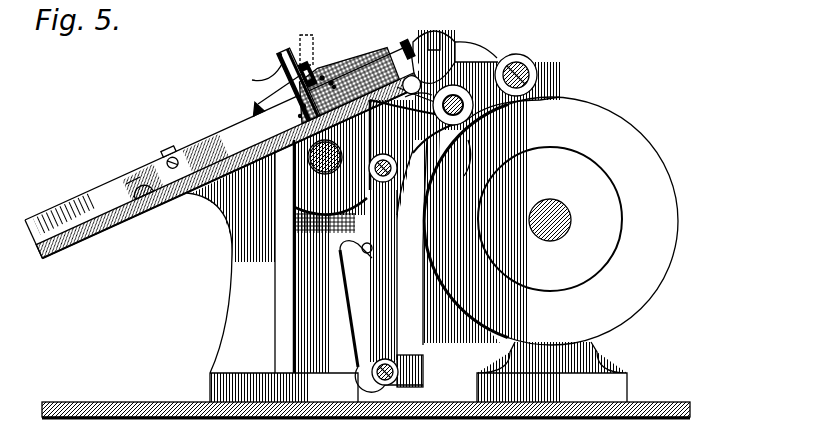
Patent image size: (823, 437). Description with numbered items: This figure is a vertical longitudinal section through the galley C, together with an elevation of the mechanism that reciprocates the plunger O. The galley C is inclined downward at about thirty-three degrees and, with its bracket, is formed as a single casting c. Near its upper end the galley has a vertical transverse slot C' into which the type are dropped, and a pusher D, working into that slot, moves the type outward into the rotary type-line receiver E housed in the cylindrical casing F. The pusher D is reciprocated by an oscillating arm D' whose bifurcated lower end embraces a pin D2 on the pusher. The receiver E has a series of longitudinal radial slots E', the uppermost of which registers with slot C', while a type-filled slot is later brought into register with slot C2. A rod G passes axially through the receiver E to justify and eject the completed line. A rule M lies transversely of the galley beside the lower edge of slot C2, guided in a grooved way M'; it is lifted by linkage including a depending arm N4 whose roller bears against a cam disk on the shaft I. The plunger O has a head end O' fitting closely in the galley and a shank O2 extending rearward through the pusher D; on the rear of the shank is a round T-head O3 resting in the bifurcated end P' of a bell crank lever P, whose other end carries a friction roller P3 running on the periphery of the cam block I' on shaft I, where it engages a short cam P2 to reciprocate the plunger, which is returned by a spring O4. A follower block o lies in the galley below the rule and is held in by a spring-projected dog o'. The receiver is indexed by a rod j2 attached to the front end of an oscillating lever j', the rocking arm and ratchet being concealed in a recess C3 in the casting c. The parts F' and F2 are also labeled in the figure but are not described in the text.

The galley C is at (224, 148).
The casting c is at (246, 240).
The follower block o is at (133, 168).
The spring projected dog o' is at (176, 148).
The slot C2 is at (259, 74).
The cylindrical casing F is at (265, 91).
The grooved way M' is at (257, 46).
The pin D2 is at (283, 50).
The oscillating arm D' is at (316, 40).
The pusher D is at (314, 65).
The vertical transverse slot C' is at (334, 65).
The stop pin F' is at (348, 65).
The shank O2 is at (342, 80).
The rule M is at (285, 116).
The head end O' is at (275, 128).
The plunger O is at (374, 55).
The round T-head O3 is at (430, 38).
The bifurcated end P' is at (473, 42).
The bell crank lever P is at (507, 84).
The friction roller P3 is at (538, 72).
The spring O4 is at (453, 101).
The link F2 is at (444, 101).
The longitudinal radial slots E' is at (418, 114).
The receiver E is at (418, 231).
The depending arm N4 is at (464, 162).
The recess C3 is at (336, 148).
The rod G is at (320, 176).
The shaft I is at (558, 220).
The cam wheel I' is at (559, 221).
The rod j2 is at (398, 318).
The oscillating lever j' is at (391, 365).
The short cam P2 is at (465, 320).